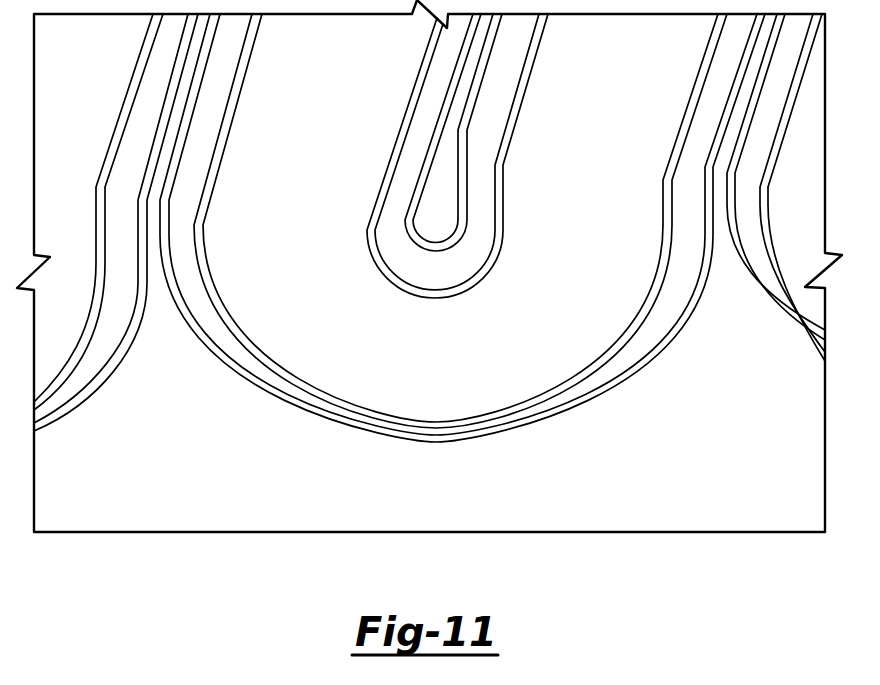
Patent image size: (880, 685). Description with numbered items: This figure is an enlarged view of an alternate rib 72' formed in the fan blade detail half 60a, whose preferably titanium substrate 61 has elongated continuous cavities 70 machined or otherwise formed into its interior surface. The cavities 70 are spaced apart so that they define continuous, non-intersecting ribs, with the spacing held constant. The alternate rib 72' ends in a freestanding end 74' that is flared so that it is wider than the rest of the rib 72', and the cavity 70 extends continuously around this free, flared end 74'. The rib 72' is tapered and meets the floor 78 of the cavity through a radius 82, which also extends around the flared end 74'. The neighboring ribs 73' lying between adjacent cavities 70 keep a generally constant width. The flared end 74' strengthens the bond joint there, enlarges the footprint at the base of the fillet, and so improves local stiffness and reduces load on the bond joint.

The substrate 61 is at (277, 524).
The fan blade detail half 60a is at (437, 531).
The ribs 73' is at (462, 228).
The cavities 70 is at (532, 402).
The radius 82 is at (186, 233).
The alternate rib 72' is at (489, 132).
The flared freestanding end 74' is at (468, 165).
The floor 78 is at (442, 385).